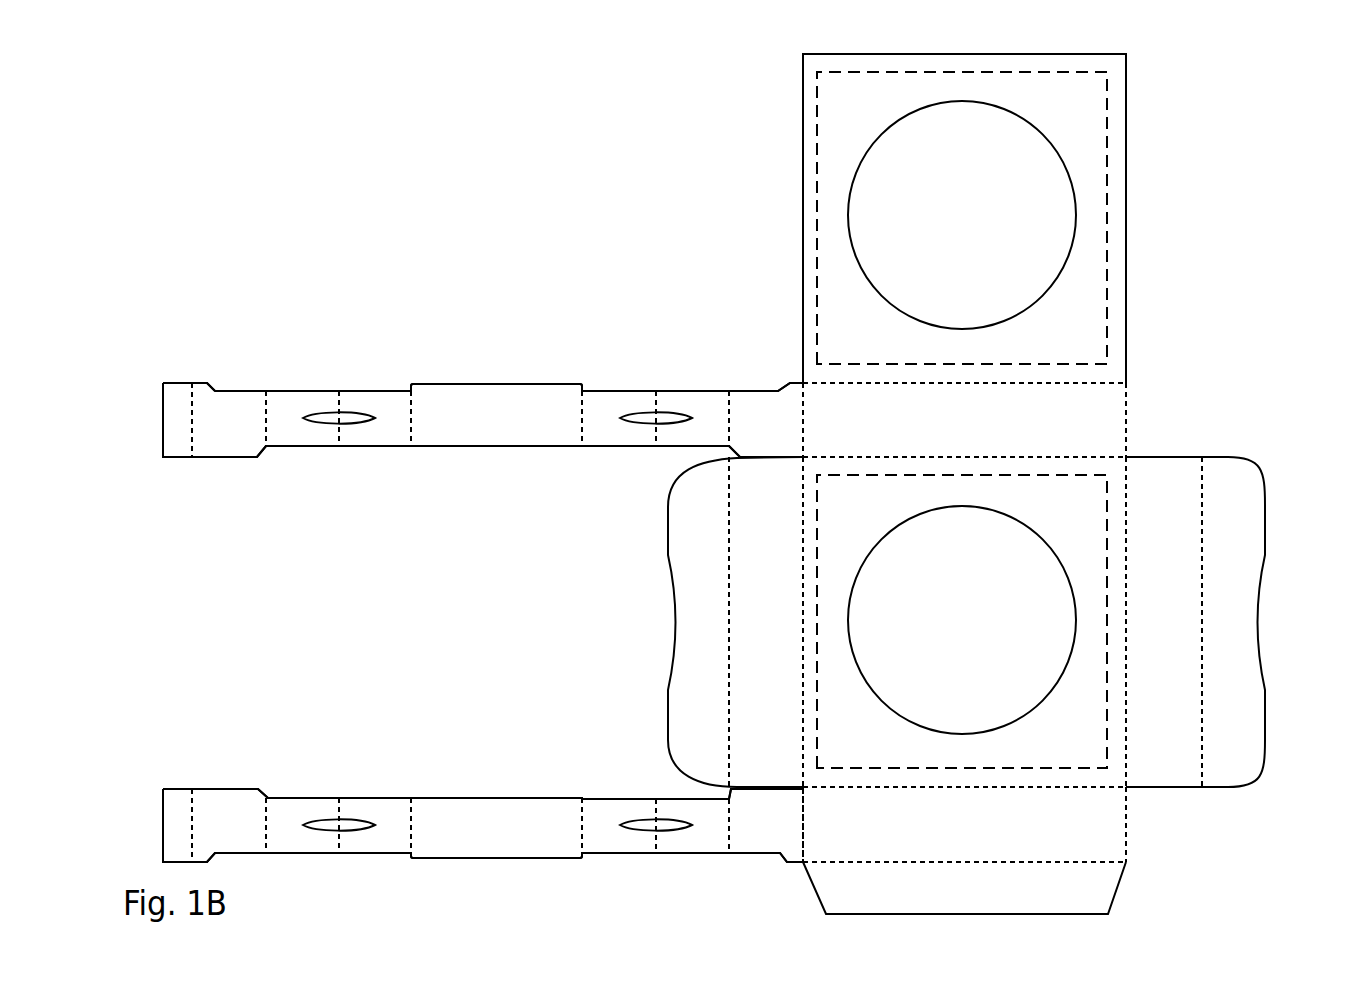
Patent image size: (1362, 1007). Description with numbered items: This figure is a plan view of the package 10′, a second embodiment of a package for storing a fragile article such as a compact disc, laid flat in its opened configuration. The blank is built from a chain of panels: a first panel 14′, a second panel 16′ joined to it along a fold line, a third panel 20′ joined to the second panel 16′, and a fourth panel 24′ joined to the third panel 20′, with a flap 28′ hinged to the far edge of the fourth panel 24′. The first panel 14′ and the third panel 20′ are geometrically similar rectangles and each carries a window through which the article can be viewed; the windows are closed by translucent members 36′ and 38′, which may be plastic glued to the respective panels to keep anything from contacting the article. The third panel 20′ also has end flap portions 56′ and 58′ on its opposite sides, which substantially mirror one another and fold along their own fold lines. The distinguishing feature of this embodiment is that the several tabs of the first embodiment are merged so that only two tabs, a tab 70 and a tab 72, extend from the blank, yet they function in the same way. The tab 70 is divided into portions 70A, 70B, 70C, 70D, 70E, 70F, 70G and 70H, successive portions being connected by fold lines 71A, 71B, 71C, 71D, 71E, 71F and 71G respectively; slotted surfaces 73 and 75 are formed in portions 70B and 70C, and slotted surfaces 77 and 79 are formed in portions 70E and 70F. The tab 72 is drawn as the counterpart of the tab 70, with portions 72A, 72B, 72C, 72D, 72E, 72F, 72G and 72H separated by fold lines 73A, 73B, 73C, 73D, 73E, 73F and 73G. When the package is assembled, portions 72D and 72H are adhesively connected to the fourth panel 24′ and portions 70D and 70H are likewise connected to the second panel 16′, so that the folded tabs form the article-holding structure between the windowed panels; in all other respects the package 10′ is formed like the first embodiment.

The package 10′ is at (724, 136).
The first panel 14′ is at (1128, 150).
The translucent member 36′ is at (1030, 215).
The second panel 16′ is at (1030, 405).
The third panel 20′ is at (1112, 468).
The translucent member 38′ is at (1052, 648).
The end flap portion 58′ is at (1228, 468).
The end flap portion 56′ is at (682, 624).
The fourth panel 24′ is at (1110, 814).
The flap 28′ is at (1098, 890).
The tab 70 is at (779, 400).
The tab portion 70A is at (745, 402).
The tab portion 70B is at (680, 402).
The tab portion 70C is at (612, 402).
The tab portion 70D is at (500, 402).
The tab portion 70E is at (375, 405).
The tab portion 70F is at (298, 403).
The tab portion 70G is at (228, 403).
The tab portion 70H is at (180, 395).
The fold line 71A is at (730, 433).
The fold line 71B is at (656, 437).
The fold line 71C is at (582, 433).
The fold line 71D is at (413, 433).
The fold line 71E is at (338, 437).
The fold line 71F is at (267, 428).
The fold line 71G is at (191, 430).
The slotted surface 73 is at (642, 420).
The slotted surface 75 is at (360, 412).
The tab 72 is at (783, 853).
The tab portion 72A is at (753, 825).
The tab portion 72B is at (700, 813).
The tab portion 72C is at (613, 808).
The tab portion 72D is at (502, 812).
The tab portion 72E is at (377, 812).
The tab portion 72F is at (298, 812).
The tab portion 72G is at (228, 812).
The tab portion 72H is at (180, 800).
The fold line 73A is at (732, 826).
The fold line 73B is at (653, 845).
The fold line 73C is at (582, 838).
The fold line 73D is at (413, 838).
The fold line 73E is at (340, 833).
The fold line 73F is at (267, 840).
The fold line 73G is at (193, 824).
The slotted surface 77 is at (643, 828).
The slotted surface 79 is at (333, 823).